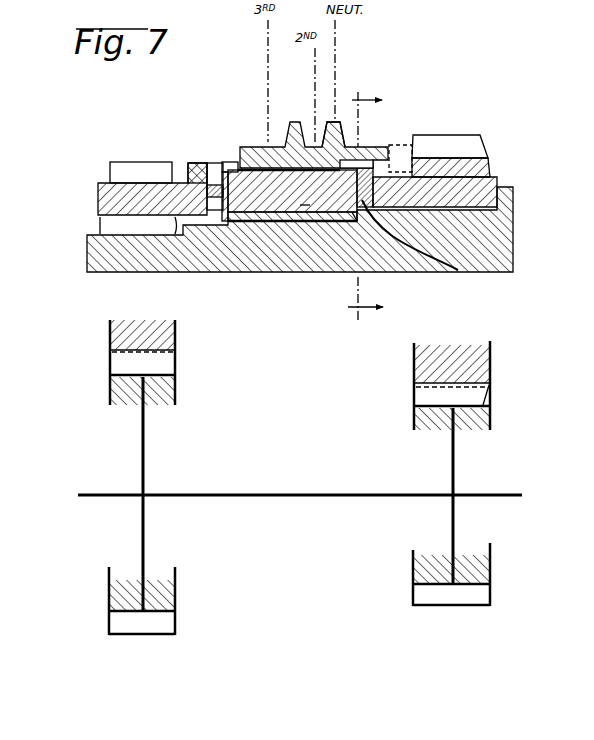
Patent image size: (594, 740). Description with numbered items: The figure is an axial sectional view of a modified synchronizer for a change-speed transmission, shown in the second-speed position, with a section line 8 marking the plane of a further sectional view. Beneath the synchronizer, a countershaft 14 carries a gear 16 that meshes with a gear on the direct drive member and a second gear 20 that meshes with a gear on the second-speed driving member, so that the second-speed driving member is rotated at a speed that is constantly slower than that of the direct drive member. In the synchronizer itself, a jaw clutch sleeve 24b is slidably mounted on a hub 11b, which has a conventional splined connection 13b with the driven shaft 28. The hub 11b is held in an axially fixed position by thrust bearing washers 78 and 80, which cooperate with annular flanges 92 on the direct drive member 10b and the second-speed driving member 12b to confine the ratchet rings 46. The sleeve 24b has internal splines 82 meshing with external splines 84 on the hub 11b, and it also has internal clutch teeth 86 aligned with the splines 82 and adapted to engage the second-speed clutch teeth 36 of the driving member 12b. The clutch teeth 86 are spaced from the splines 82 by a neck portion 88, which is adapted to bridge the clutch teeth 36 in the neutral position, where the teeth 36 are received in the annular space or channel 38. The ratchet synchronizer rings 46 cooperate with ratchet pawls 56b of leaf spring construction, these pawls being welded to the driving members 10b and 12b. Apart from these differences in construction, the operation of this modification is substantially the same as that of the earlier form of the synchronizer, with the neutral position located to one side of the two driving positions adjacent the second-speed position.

The section line 8 is at (365, 204).
The direct drive member 10b is at (97, 200).
The hub 11b is at (302, 286).
The second-speed driving member 12b is at (496, 180).
The splined connection 13b is at (285, 265).
The countershaft 14 is at (326, 492).
The gear 16 is at (115, 393).
The second gear 20 is at (488, 421).
The jaw clutch sleeve 24b is at (336, 125).
The driven shaft 28 is at (503, 233).
The clutch teeth 36 is at (413, 147).
The channel 38 is at (413, 174).
The ratchet rings 46 is at (202, 170).
The ratchet pawls 56b is at (207, 190).
The thrust bearing washer 78 is at (292, 238).
The thrust bearing washer 80 is at (358, 220).
The internal splines 82 is at (268, 165).
The external splines 84 is at (228, 160).
The internal clutch teeth 86 is at (388, 150).
The neck portion 88 is at (362, 158).
The annular flanges 92 is at (428, 286).